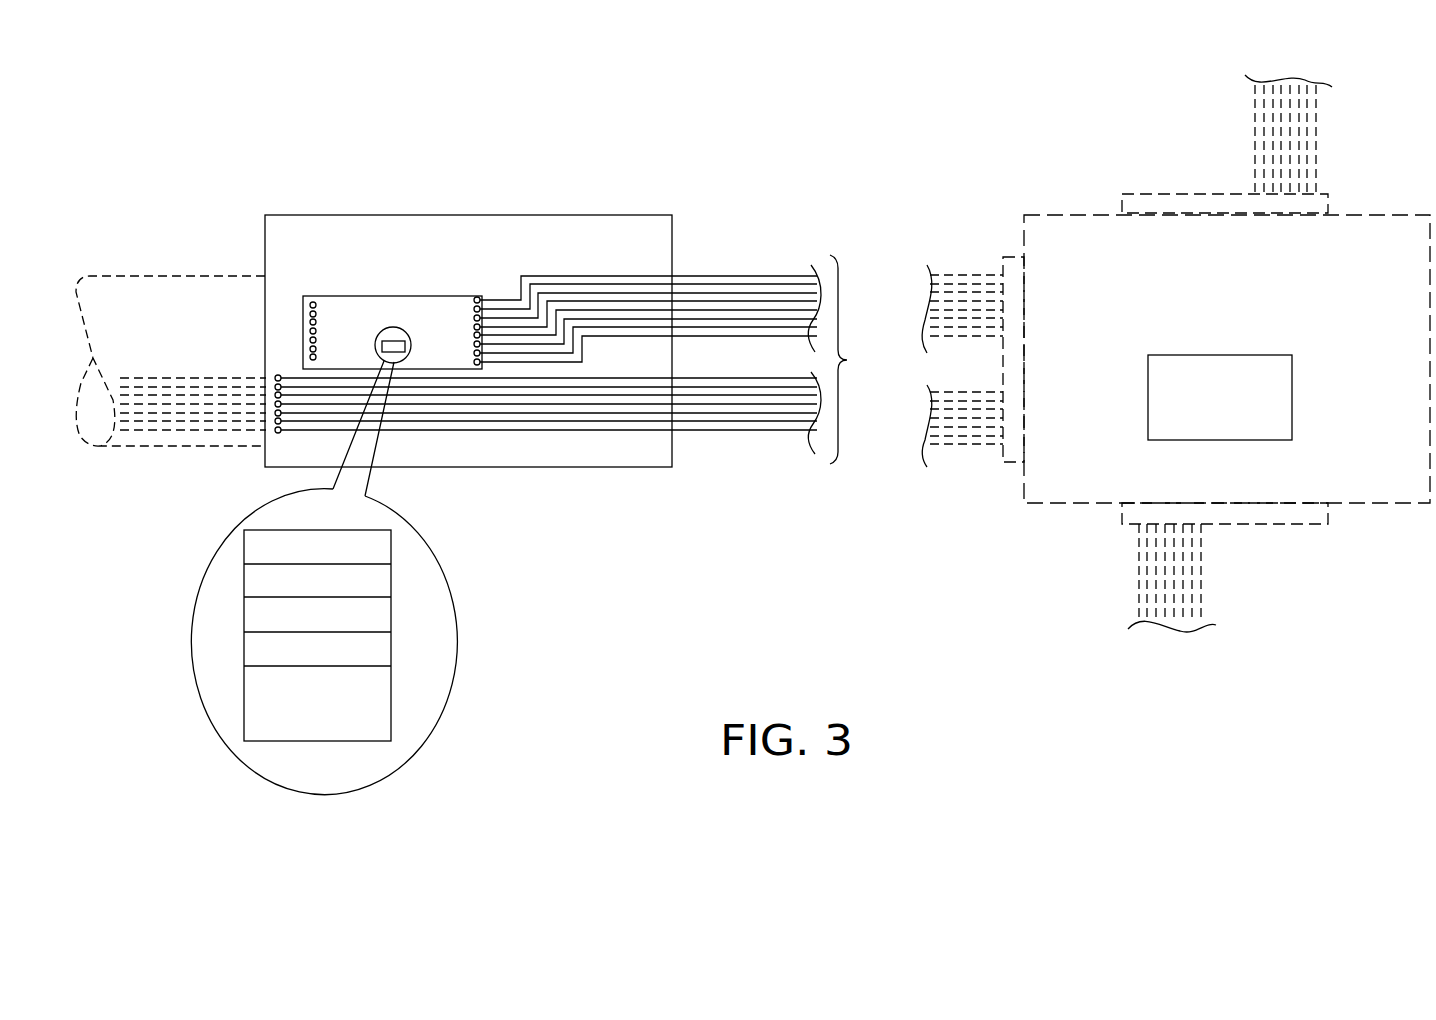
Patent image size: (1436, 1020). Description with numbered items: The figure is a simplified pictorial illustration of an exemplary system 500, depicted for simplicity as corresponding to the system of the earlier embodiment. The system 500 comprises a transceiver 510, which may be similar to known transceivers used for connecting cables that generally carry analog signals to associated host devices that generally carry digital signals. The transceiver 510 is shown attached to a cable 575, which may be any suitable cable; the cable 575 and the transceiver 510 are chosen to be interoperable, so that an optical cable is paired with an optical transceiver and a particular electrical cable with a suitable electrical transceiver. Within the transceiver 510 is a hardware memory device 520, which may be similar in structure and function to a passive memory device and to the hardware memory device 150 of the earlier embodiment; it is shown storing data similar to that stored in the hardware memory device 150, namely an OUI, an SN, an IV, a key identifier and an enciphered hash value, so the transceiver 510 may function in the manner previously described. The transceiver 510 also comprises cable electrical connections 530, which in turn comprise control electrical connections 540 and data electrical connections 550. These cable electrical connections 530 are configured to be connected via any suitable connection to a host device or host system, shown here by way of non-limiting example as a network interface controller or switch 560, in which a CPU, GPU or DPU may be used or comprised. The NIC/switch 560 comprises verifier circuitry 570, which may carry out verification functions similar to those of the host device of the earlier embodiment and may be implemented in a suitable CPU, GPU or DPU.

The system 500 is at (255, 126).
The transceiver 510 is at (557, 467).
The hardware memory device 520 is at (403, 296).
The cable electrical connections 530 is at (861, 359).
The control electrical connections 540 is at (709, 258).
The data electrical connections 550 is at (714, 484).
The cable 575 is at (165, 277).
The hardware memory device 150 is at (218, 693).
The network interface controller (NIC) or switch 560 is at (1060, 503).
The verifier circuitry 570 is at (1207, 440).